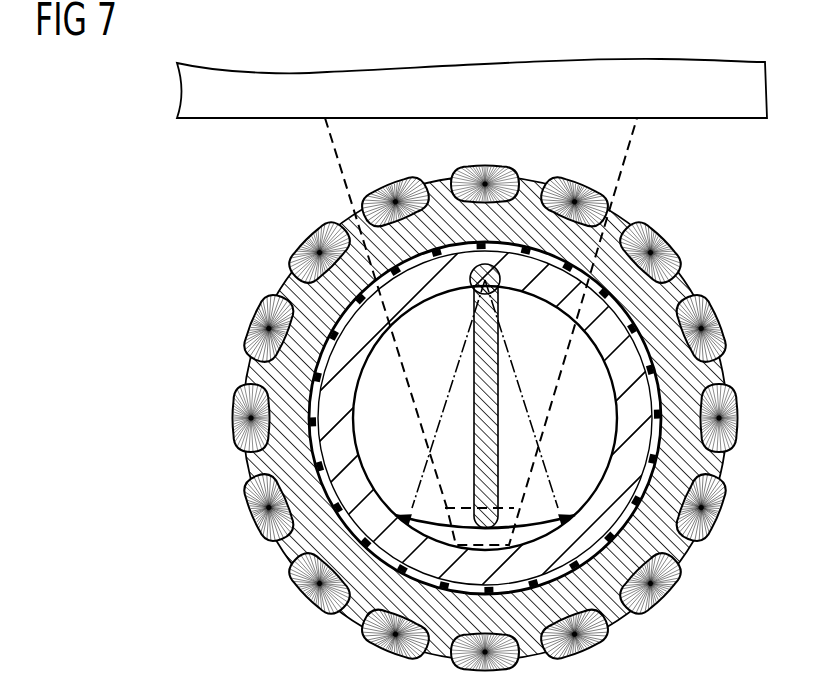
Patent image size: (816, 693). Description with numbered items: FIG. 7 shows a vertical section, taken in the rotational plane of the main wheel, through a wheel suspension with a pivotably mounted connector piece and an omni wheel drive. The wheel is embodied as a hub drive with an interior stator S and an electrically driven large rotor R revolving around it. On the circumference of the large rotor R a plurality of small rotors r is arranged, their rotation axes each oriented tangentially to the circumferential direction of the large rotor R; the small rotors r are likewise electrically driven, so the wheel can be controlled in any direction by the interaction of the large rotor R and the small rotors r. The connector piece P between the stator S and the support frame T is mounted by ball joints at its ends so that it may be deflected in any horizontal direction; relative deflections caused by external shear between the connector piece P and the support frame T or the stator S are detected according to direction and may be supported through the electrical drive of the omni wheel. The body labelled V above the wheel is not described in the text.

The large rotor R is at (287, 285).
The small rotors r is at (233, 410).
The stator S is at (548, 300).
The connector piece P is at (473, 388).
The support frame T is at (333, 156).
The surface / wall V is at (706, 118).